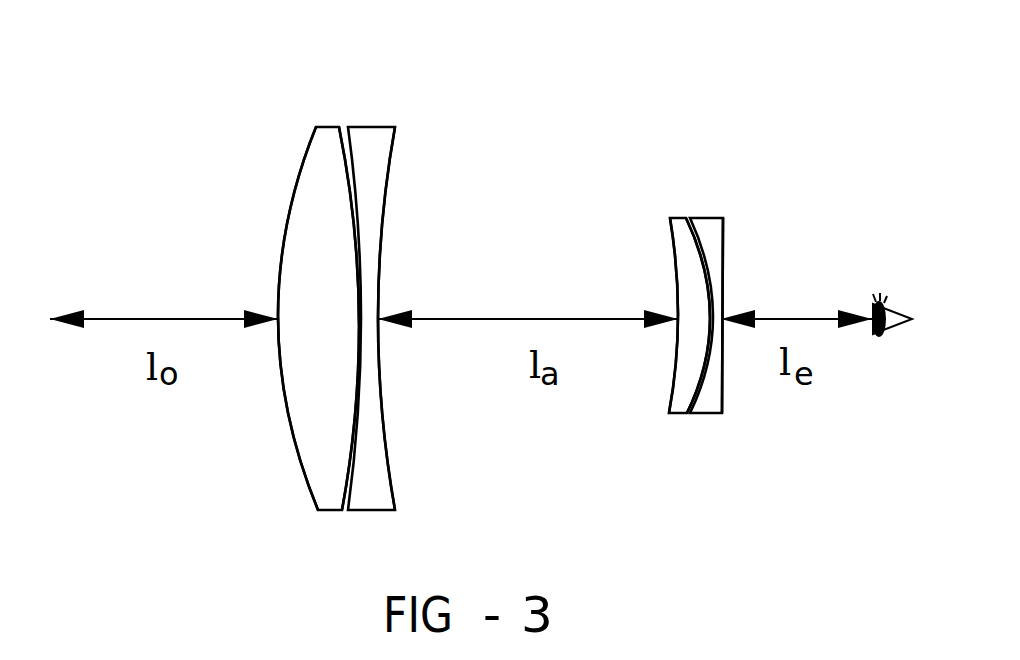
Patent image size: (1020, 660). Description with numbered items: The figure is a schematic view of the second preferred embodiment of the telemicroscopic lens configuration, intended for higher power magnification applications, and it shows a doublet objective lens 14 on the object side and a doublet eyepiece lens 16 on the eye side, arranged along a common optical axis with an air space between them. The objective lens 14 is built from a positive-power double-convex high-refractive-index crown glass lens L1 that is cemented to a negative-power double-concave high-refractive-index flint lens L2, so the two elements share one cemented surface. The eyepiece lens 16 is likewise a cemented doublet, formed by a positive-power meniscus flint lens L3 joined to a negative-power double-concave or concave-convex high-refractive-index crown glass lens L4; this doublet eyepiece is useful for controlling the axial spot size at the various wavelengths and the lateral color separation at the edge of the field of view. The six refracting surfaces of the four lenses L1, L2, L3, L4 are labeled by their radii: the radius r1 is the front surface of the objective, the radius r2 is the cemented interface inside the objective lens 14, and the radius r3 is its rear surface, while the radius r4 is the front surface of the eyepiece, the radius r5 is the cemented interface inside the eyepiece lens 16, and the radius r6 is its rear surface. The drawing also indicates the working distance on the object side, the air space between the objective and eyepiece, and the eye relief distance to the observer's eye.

The doublet objective lens 14 is at (346, 306).
The doublet eyepiece lens 16 is at (694, 309).
The positive-power double-convex high-refractive-index crown glass lens L1 is at (288, 200).
The negative-power double-concave high-refractive-index flint lens L2 is at (385, 210).
The positive-power meniscus flint lens L3 is at (673, 253).
The negative-power double-concave or concave-convex high-refractive-index crown glas L4 is at (722, 252).
The radius of first lens surface r1 is at (298, 463).
The radius of second lens surface r2 is at (350, 458).
The radius of third lens surface r3 is at (387, 425).
The radius of fourth lens surface r4 is at (675, 378).
The radius of fifth lens surface r5 is at (687, 413).
The radius of sixth lens surface r6 is at (723, 382).